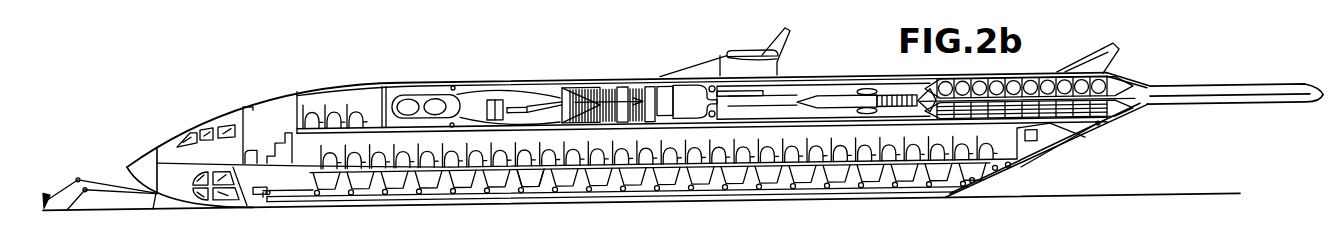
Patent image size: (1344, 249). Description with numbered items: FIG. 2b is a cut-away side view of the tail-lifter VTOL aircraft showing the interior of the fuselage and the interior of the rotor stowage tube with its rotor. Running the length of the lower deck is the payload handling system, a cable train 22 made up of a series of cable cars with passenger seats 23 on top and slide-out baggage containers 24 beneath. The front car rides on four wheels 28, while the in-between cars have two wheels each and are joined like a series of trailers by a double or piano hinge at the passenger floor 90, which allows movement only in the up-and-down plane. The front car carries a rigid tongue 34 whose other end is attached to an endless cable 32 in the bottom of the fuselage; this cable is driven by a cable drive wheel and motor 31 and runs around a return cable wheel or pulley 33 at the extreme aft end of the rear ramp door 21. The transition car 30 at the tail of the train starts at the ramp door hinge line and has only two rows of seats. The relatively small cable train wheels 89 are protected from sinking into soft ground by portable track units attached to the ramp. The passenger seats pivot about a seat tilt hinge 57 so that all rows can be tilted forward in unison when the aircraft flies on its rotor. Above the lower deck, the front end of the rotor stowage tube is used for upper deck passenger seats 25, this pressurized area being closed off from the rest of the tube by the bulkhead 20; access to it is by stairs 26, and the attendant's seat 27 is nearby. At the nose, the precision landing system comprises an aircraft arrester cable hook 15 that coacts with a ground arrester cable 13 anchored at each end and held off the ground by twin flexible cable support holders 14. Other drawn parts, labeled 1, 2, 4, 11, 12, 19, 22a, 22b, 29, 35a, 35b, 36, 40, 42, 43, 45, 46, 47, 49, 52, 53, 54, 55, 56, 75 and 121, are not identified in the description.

The vehicle hull 1 is at (858, 79).
The aircraft 2 is at (712, 58).
The aircraft tail fin 4 is at (789, 44).
The cockpit windows 11 is at (205, 119).
The lower windows 12 is at (205, 196).
The arrester cable 13 is at (90, 178).
The flexible cable support holders 14 is at (68, 178).
The aircraft arrester cable hook 15 is at (156, 196).
The tank housing 19 is at (400, 84).
The bulkhead 20 is at (384, 80).
The rear ramp door 21 is at (1024, 160).
The cable train 22 is at (868, 178).
The passenger seat 22a is at (475, 180).
The passenger seat 22b is at (522, 180).
The passenger seats 23 is at (740, 178).
The slide-out baggage containers 24 is at (592, 184).
The upper deck passenger seats 25 is at (350, 88).
The stairs 26 is at (289, 132).
The attendant's seat 27 is at (243, 146).
The wheels 28 is at (410, 192).
The rear hatch door 29 is at (1047, 146).
The transition car 30 is at (985, 180).
The cable drive wheel and motor 31 is at (253, 192).
The endless cable 32 is at (1085, 142).
The return cable wheel or pulley 33 is at (1104, 128).
The rigid tongue 34 is at (268, 193).
The tail boom upper 35a is at (1178, 92).
The tail boom lower 35b is at (1192, 114).
The upper stern pod 36 is at (1016, 81).
The lower stern pod 40 is at (1112, 120).
The launcher mechanism 42 is at (665, 88).
The aircraft canopy 43 is at (714, 52).
The missile 45 is at (822, 96).
The missile tail 46 is at (900, 96).
The tail fin 47 is at (1119, 58).
The tank body 49 is at (438, 99).
The piston 52 is at (520, 102).
The truss 53 is at (568, 85).
The plate 54 is at (648, 85).
The valve block 55 is at (472, 92).
The tanks 56 is at (412, 100).
The seat tilt hinge 57 is at (650, 176).
The nose bulkhead 75 is at (155, 142).
The cable train wheels 89 is at (758, 197).
The passenger floor 90 is at (548, 184).
The grille 121 is at (590, 85).